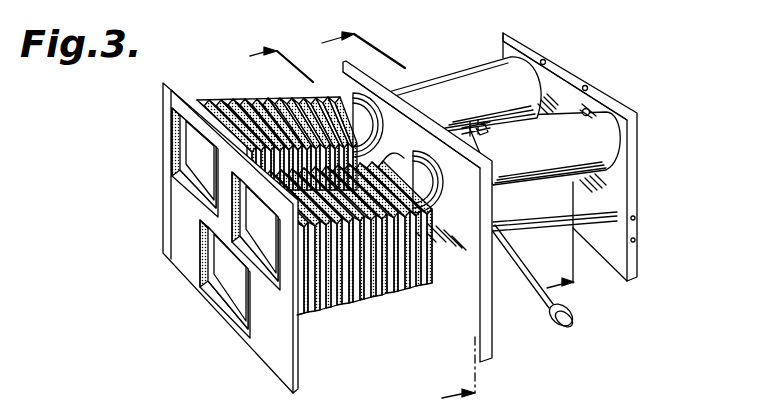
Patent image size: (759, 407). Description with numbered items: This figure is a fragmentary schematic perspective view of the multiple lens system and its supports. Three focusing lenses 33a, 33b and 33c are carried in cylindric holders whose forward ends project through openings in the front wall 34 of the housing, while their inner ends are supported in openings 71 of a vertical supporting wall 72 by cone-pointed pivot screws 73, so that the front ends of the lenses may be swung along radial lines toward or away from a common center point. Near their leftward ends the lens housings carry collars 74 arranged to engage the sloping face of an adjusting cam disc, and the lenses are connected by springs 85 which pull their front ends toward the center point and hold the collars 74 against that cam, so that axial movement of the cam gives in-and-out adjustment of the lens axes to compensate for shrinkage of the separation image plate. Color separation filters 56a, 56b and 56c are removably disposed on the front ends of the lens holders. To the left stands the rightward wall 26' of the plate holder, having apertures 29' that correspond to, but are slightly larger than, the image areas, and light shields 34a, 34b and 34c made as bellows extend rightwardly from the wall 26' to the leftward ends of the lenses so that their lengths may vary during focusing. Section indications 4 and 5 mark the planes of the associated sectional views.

The rightward wall of the plate holder 26' is at (200, 238).
The apertures 29' is at (160, 162).
The focusing lens 33a is at (455, 80).
The focusing lens 33b is at (597, 130).
The focusing lens 33c is at (540, 203).
The front wall of the housing 34 is at (457, 322).
The light shield 34a is at (217, 100).
The light shield 34b is at (437, 240).
The light shield 34c is at (320, 307).
The filter 56a is at (347, 94).
The filter 56b is at (413, 152).
The filter 56c is at (475, 357).
The openings 71 is at (588, 108).
The vertical supporting wall 72 is at (636, 181).
The cone-pointed pivot screws 73 is at (592, 104).
The collars 74 is at (368, 100).
The springs 85 is at (492, 125).
The section line 4 is at (362, 213).
The section line 5 is at (458, 157).